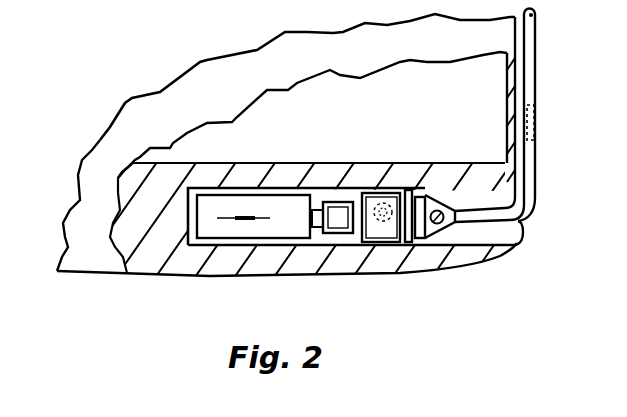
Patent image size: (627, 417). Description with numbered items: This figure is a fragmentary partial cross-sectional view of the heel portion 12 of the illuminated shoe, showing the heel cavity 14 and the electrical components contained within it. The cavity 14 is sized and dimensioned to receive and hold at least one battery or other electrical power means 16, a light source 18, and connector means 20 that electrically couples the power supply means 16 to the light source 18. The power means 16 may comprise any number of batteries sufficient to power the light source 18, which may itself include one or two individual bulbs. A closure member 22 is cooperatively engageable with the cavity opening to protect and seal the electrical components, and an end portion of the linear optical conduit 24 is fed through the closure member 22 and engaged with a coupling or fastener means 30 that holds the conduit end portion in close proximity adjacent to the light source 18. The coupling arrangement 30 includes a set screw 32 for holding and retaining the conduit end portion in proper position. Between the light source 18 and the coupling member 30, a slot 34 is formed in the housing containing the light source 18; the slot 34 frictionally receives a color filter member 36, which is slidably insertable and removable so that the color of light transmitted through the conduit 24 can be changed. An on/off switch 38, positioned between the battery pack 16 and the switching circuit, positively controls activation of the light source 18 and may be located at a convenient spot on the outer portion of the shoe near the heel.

The heel portion 12 is at (140, 188).
The cavity 14 is at (188, 235).
The electrical power means 16 is at (210, 224).
The light source 18 is at (385, 245).
The connector means 20 is at (345, 236).
The closure member 22 is at (524, 233).
The linear optical conduit 24 is at (528, 43).
The coupling means 30 is at (440, 240).
The set screw 32 is at (444, 218).
The slot 34 is at (387, 192).
The color filter member 36 is at (408, 195).
The on/off switch 38 is at (540, 122).